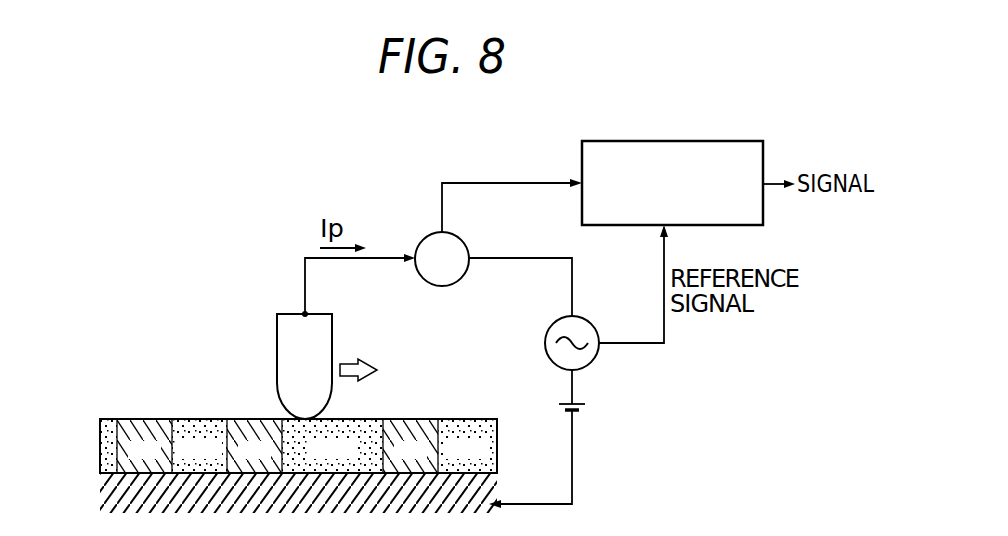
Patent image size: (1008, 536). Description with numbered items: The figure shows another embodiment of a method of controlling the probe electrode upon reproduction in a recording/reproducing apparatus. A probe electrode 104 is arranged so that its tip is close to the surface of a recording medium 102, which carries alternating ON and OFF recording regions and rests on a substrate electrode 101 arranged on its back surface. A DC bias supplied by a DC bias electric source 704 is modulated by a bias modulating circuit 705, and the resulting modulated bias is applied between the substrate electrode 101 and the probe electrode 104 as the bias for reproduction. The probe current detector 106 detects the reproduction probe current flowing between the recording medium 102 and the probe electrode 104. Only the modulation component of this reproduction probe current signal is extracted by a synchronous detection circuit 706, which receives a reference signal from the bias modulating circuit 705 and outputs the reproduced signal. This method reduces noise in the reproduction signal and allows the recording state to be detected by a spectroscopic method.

The substrate electrode 101 is at (125, 490).
The recording medium 102 is at (135, 428).
The probe electrode 104 is at (283, 343).
The probe current detector 106 is at (432, 236).
The DC bias electric source 704 is at (583, 409).
The bias modulating circuit 705 is at (594, 357).
The synchronous detection circuit 706 is at (657, 140).